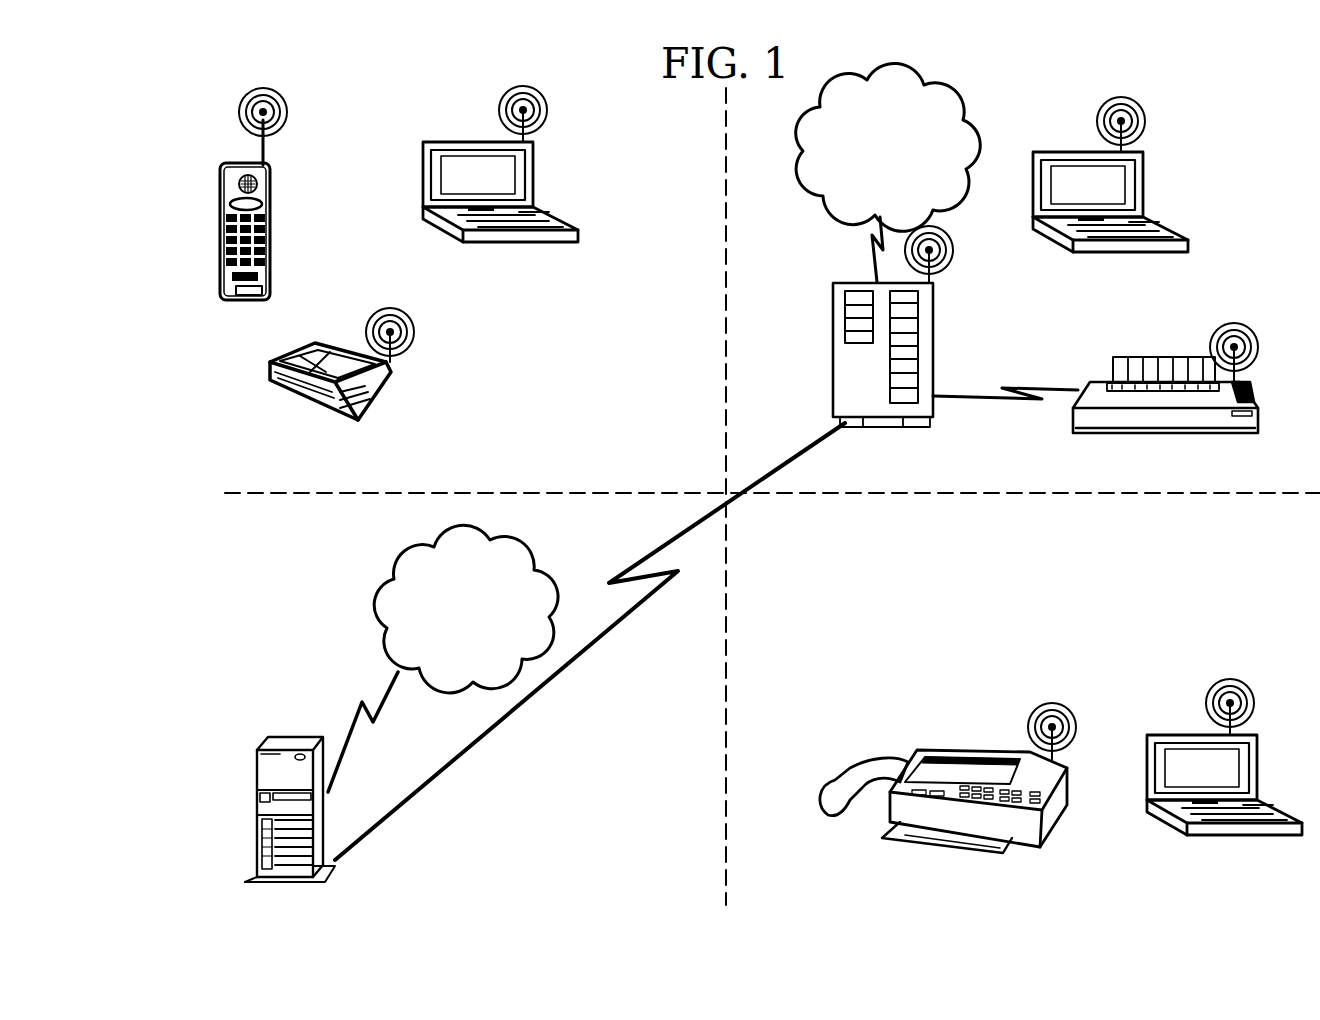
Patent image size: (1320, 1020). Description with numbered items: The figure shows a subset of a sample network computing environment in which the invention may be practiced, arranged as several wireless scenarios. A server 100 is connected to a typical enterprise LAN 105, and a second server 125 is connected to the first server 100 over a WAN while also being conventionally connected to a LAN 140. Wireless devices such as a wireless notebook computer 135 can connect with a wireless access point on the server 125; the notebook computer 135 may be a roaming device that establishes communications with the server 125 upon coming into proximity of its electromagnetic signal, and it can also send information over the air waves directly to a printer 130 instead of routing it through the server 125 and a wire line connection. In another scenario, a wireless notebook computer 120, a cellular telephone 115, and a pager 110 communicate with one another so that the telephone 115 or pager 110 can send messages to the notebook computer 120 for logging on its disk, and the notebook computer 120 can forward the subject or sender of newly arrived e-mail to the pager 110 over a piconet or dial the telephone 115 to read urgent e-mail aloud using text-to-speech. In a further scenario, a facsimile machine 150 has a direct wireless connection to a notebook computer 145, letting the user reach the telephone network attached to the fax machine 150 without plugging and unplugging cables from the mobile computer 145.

The server 100 is at (271, 809).
The enterprise LAN 105 is at (437, 609).
The pager 110 is at (344, 365).
The cellular telephone 115 is at (274, 194).
The wireless notebook computer 120 is at (506, 164).
The second server 125 is at (908, 326).
The printer 130 is at (1191, 378).
The wireless notebook computer 135 is at (1113, 174).
The LAN 140 is at (860, 147).
The notebook computer 145 is at (1227, 757).
The facsimile machine 150 is at (948, 777).